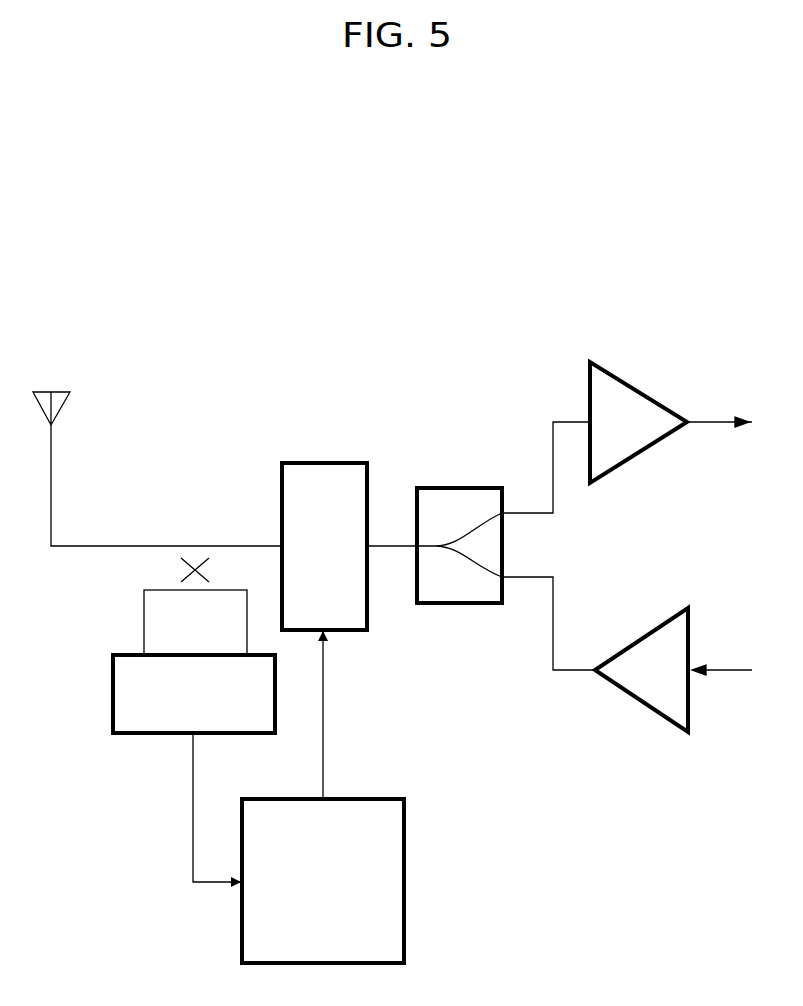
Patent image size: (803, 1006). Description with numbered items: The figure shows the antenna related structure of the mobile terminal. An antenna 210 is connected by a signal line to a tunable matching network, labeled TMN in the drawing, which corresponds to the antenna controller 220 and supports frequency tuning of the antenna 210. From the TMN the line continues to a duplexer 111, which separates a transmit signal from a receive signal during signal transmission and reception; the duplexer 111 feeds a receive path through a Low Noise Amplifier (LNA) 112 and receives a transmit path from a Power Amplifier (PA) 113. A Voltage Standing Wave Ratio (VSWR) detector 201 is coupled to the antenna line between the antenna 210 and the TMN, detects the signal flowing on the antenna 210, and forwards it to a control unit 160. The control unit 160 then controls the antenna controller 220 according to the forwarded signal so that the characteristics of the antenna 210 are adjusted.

The antenna 210 is at (77, 380).
The antenna controller 220 is at (330, 459).
The duplexer 111 is at (463, 478).
The Low Noise Amplifier (LNA) 112 is at (646, 384).
The Power Amplifier (PA) 113 is at (638, 634).
The VSWR detector 201 is at (110, 651).
The control unit 160 is at (381, 794).